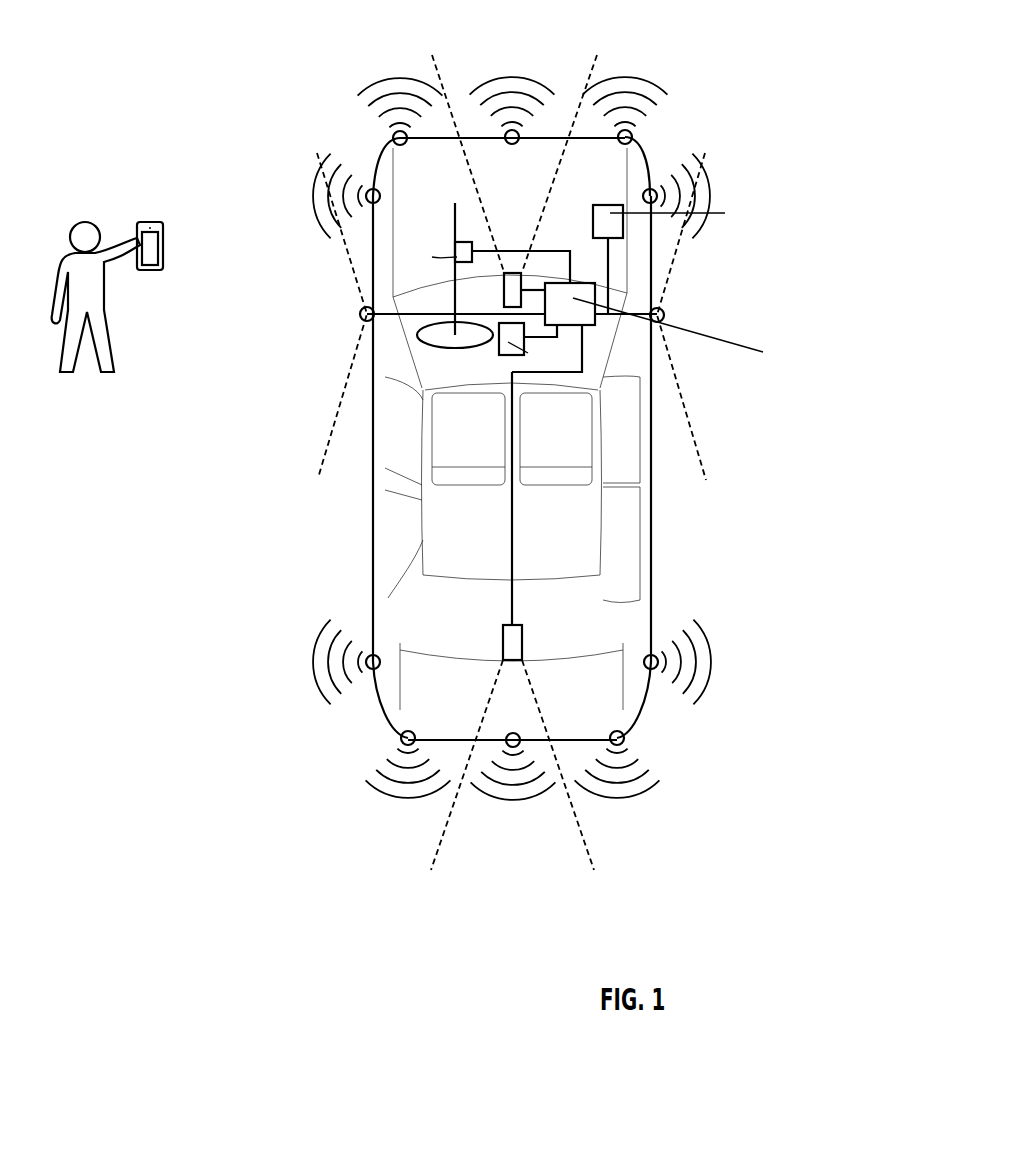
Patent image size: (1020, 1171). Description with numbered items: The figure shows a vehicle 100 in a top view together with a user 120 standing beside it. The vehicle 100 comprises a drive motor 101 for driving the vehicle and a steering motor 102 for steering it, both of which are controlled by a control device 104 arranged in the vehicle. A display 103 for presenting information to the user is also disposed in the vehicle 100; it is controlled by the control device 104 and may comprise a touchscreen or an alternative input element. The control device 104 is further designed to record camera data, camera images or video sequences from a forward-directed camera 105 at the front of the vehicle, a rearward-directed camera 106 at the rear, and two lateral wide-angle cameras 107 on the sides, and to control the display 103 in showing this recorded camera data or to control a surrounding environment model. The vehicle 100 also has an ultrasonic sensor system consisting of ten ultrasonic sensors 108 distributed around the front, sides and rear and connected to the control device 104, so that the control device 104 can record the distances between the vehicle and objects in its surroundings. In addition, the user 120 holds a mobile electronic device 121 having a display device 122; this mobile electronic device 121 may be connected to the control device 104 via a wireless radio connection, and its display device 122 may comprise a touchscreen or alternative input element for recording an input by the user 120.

The vehicle 100 is at (686, 574).
The drive motor 101 is at (613, 225).
The steering motor 102 is at (455, 252).
The display 103 is at (499, 355).
The control device 104 is at (585, 313).
The forward-directed camera 105 is at (512, 292).
The rearward-directed camera 106 is at (513, 642).
The lateral wide-angle cameras 107 is at (360, 313).
The ultrasonic sensors 108 is at (512, 130).
The user 120 is at (87, 222).
The mobile electronic device 121 is at (162, 233).
The display device 122 is at (150, 253).